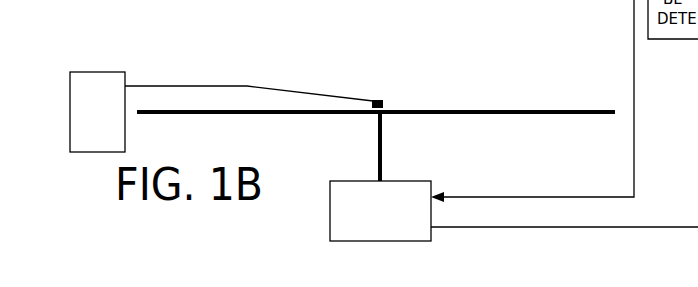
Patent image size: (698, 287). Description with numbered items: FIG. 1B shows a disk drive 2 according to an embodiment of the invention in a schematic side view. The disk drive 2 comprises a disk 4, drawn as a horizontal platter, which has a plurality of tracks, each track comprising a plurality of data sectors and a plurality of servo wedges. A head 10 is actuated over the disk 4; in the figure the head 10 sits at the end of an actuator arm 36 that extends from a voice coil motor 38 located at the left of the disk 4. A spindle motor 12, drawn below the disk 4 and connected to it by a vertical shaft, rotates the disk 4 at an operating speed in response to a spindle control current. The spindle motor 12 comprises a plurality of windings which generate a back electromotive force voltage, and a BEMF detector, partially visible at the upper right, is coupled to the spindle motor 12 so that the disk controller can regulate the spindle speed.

The disk drive 2 is at (512, 64).
The disk 4 is at (445, 110).
The head 10 is at (380, 99).
The spindle motor 12 is at (330, 224).
The actuator arm 36 is at (167, 85).
The voice coil motor (VCM) 38 is at (100, 72).